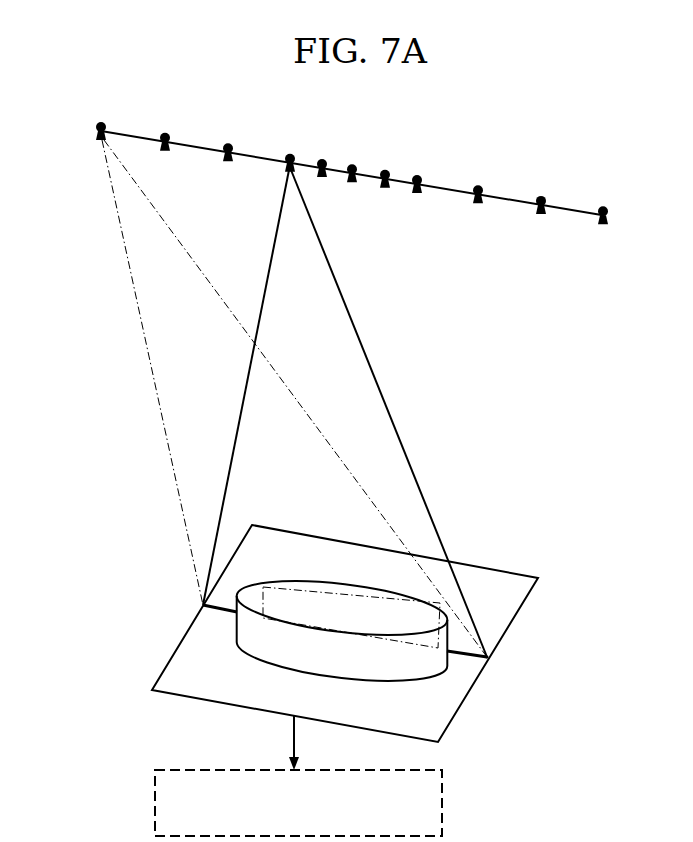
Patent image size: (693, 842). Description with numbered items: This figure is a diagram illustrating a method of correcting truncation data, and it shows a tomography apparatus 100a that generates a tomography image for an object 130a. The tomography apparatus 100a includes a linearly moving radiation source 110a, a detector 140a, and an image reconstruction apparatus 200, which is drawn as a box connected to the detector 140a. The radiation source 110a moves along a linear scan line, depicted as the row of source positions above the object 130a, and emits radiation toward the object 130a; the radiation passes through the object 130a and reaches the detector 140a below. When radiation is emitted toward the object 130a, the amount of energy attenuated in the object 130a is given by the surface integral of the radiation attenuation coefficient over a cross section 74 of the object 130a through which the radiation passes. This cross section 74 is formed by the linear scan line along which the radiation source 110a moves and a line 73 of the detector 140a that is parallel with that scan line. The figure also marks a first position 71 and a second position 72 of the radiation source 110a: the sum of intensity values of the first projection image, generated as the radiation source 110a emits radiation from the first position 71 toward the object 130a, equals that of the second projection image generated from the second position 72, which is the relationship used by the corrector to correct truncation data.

The tomography apparatus 100a is at (466, 148).
The radiation source 110a is at (608, 206).
The first position 71 is at (291, 156).
The second position 72 is at (104, 124).
The line of the detector 73 is at (470, 658).
The cross section 74 is at (338, 598).
The object 130a is at (232, 618).
The detector 140a is at (165, 667).
The image reconstruction apparatus 200 is at (155, 807).